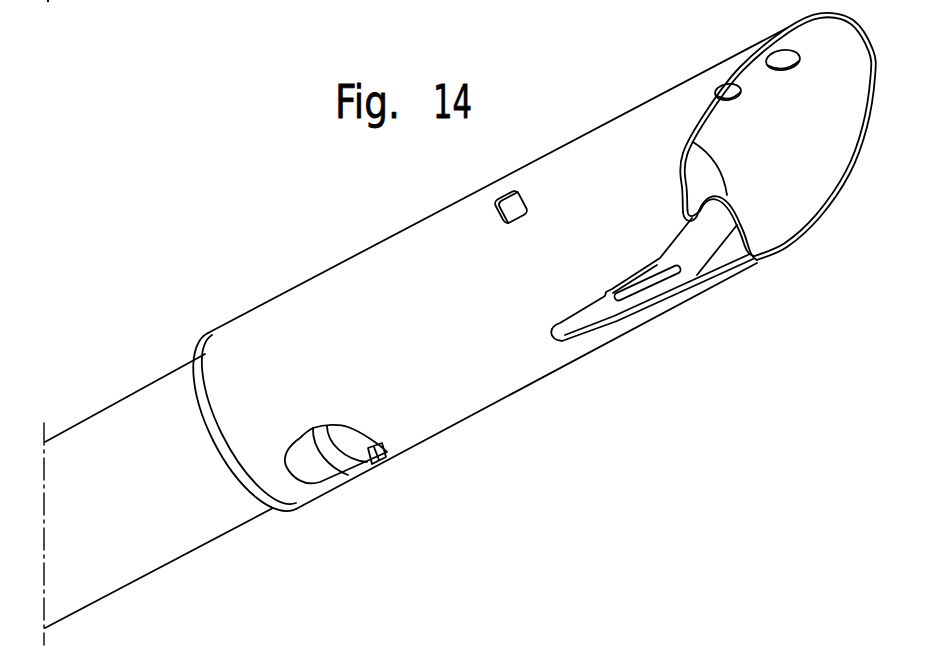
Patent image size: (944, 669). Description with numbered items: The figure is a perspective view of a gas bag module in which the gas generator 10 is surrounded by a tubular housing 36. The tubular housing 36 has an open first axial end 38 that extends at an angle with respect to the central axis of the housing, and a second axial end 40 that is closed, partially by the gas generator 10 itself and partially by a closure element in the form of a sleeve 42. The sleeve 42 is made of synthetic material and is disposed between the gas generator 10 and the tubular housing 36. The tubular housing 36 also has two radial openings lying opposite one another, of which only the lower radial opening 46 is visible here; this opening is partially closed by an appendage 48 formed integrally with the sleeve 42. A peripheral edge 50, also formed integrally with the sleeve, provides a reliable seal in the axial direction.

The gas generator 10 is at (166, 570).
The tubular housing 36 is at (614, 142).
The open first axial end 38 is at (815, 170).
The second axial end 40 is at (199, 375).
The sleeve 42 is at (246, 495).
The radial opening 46 is at (360, 448).
The appendage 48 is at (323, 470).
The peripheral edge 50 is at (207, 337).